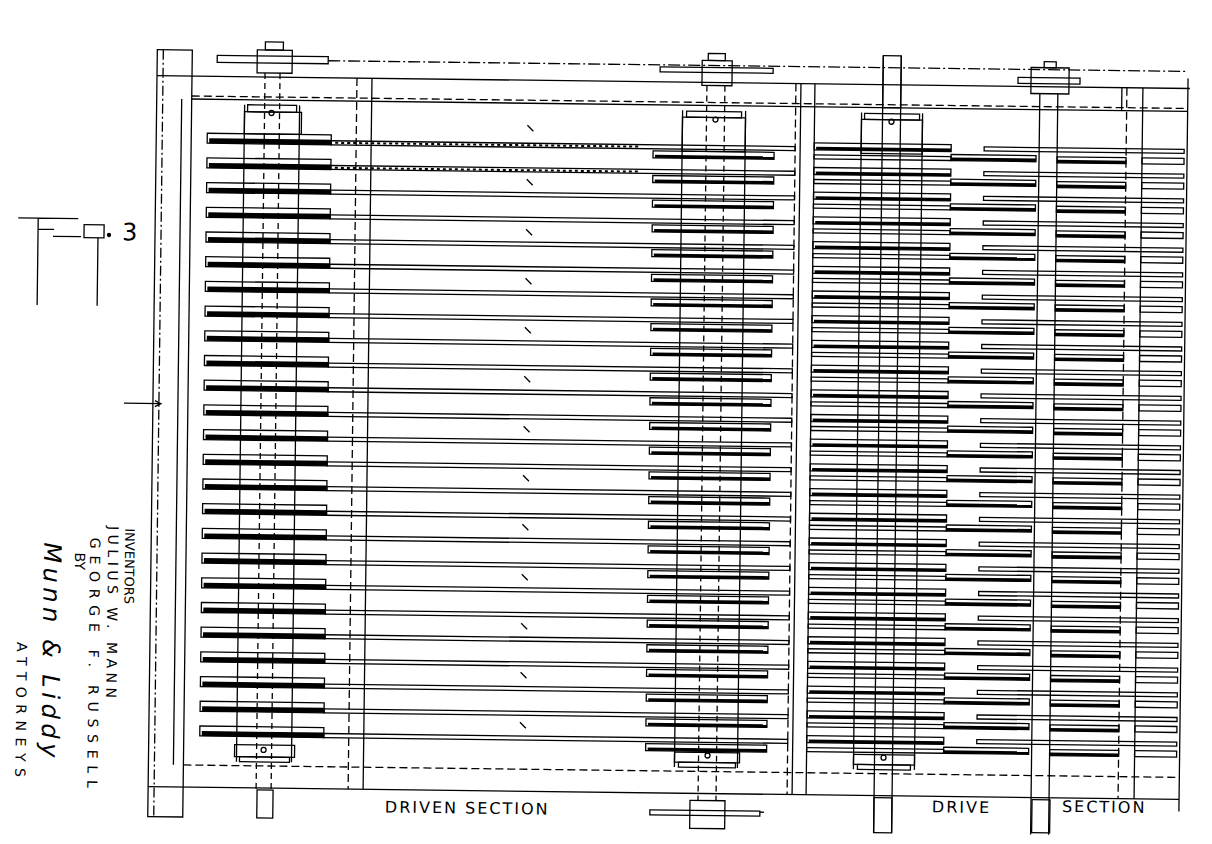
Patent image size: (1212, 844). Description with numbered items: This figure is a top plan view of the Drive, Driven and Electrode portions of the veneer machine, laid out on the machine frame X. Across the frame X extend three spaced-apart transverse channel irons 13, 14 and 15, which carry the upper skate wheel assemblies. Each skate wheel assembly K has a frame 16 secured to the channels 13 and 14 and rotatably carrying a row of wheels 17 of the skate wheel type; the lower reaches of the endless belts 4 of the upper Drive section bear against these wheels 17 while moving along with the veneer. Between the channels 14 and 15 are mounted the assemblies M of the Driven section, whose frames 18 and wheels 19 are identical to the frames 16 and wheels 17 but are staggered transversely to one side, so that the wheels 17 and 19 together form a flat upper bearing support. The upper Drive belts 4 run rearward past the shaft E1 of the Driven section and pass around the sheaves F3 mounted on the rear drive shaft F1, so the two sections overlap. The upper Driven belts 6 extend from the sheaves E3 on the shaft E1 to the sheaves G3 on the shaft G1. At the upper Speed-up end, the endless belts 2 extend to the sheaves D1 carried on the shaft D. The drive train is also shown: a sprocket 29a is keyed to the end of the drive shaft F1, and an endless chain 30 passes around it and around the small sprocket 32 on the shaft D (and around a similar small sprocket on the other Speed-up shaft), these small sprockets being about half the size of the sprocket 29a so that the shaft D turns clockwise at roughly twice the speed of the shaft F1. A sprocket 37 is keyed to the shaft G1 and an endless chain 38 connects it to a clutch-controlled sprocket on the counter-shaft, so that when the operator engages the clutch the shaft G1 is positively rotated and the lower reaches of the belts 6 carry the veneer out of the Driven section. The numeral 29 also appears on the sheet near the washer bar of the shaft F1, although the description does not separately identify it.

The endless belts 6 is at (208, 216).
The frames 18 is at (560, 429).
The wheels 19 is at (487, 154).
The upper skate wheel assemblies M is at (535, 424).
The sheaves G3 is at (208, 168).
The sheaves F3 is at (760, 148).
The sheaves E3 is at (928, 138).
The skate wheel assembly K is at (990, 433).
The frame 16 is at (990, 433).
The wheels 17 is at (1005, 148).
The endless belts 2 is at (1069, 447).
The sheaves D1 is at (1088, 435).
The endless belts 4 is at (1092, 439).
The channel iron 15 is at (372, 116).
The channel iron 14 is at (816, 116).
The channel iron 13 is at (1132, 108).
The sprocket 37 is at (328, 60).
The endless chain 38 is at (464, 64).
The second sprocket 29a is at (660, 62).
The rear drive shaft F1 is at (742, 49).
The endless chain 30 is at (870, 60).
The small sprocket 32 is at (1018, 64).
The shaft G1 is at (260, 809).
The washer bar 29 is at (773, 806).
The shaft E1 is at (877, 808).
The shaft D is at (1035, 817).
The frame X is at (133, 404).